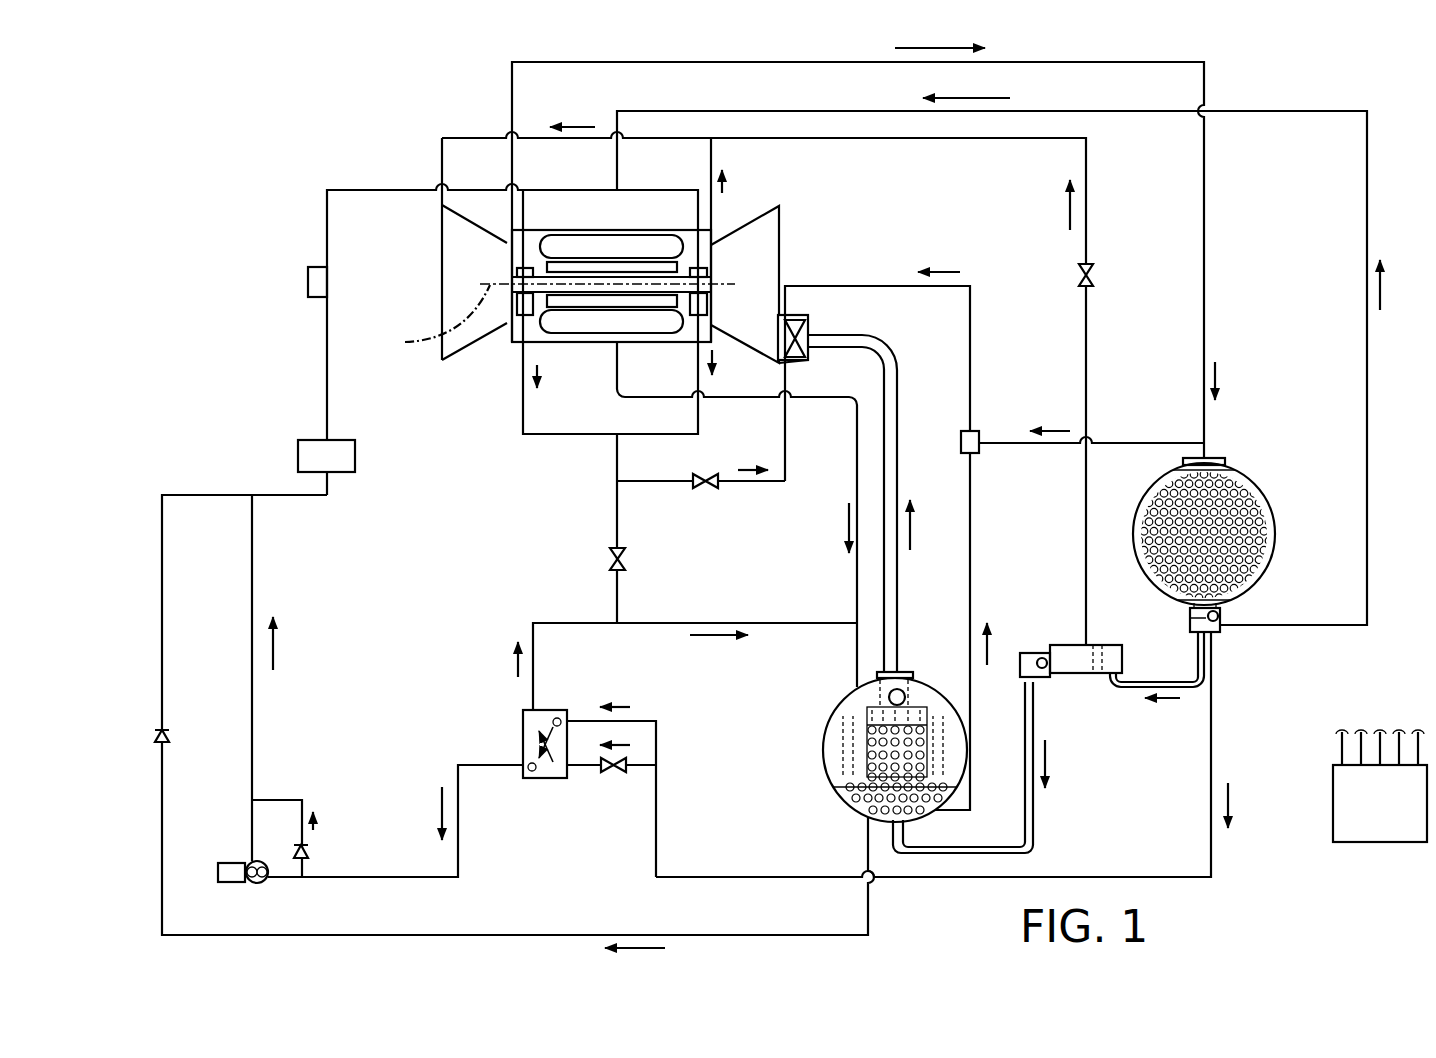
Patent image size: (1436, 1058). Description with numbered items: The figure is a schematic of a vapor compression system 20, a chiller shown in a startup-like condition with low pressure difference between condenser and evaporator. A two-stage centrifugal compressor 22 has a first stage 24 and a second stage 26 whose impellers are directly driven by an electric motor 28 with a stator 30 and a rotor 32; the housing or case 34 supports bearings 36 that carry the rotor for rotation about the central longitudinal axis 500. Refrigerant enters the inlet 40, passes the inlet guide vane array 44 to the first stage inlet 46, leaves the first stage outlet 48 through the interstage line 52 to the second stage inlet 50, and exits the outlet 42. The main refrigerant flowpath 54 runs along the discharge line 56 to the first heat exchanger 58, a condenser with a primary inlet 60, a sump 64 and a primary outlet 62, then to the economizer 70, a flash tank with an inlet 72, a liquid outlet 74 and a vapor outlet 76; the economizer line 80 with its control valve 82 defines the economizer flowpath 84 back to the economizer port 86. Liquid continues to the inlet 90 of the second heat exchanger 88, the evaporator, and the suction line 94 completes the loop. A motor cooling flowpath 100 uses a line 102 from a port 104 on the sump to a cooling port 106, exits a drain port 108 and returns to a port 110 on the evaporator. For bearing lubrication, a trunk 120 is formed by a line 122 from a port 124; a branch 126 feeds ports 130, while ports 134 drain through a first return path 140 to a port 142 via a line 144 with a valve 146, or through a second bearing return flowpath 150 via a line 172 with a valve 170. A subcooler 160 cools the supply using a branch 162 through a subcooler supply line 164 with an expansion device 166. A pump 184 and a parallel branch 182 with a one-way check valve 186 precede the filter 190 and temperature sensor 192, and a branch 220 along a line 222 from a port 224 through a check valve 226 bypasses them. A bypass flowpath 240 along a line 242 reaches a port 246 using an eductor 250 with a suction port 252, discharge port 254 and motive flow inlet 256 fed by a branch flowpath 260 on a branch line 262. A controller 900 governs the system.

The vapor compression system 20 is at (248, 115).
The compressor 22 is at (466, 372).
The first stage 24 is at (768, 233).
The second stage 26 is at (450, 302).
The electric motor 28 is at (708, 238).
The stator 30 is at (634, 324).
The rotor 32 is at (586, 275).
The housing or case 34 is at (648, 342).
The bearings 36 is at (520, 315).
The inlet 40 is at (815, 338).
The outlet 42 is at (503, 238).
The inlet guide vane array 44 is at (798, 316).
The first stage inlet 46 is at (780, 333).
The first stage outlet 48 is at (715, 247).
The second stage inlet 50 is at (440, 207).
The interstage line 52 is at (647, 142).
The main refrigerant flowpath 54 is at (826, 74).
The discharge line 56 is at (753, 62).
The first heat exchanger 58 is at (1283, 490).
The primary inlet 60 is at (1207, 458).
The primary outlet 62 is at (1194, 634).
The sump 64 is at (1182, 617).
The economizer 70 is at (1074, 702).
The inlet 72 is at (1100, 688).
The liquid outlet 74 is at (1024, 685).
The vapor outlet 76 is at (1087, 645).
The economizer line 80 is at (1090, 335).
The control valve 82 is at (1106, 275).
The economizer flowpath 84 is at (1110, 186).
The economizer port 86 is at (718, 142).
The second heat exchanger 88 is at (939, 669).
The inlet 90 is at (898, 822).
The suction line 94 is at (898, 598).
The motor cooling flowpath 100 is at (1388, 413).
The line 102 is at (1370, 568).
The port 104 is at (1222, 622).
The cooling port / motor cooling return line 106 is at (620, 232).
The drain port 108 is at (625, 343).
The port 110 is at (863, 688).
The trunk of bearing supply flowpath 120 is at (1193, 893).
The line 122 is at (1213, 853).
The port 124 is at (1215, 637).
The branch 126 is at (371, 887).
The ports 130 is at (527, 230).
The ports 134 is at (530, 345).
The first return path 140 is at (658, 492).
The port 142 is at (792, 360).
The line 144 is at (640, 481).
The valve 146 is at (712, 497).
The second bearing return flowpath 150 is at (597, 512).
The subcooler 160 is at (547, 793).
The branch 162 is at (554, 636).
The subcooler supply line 164 is at (640, 772).
The expansion device 166 is at (613, 785).
The valve 170 is at (632, 562).
The line 172 is at (612, 537).
The parallel branch 182 is at (283, 793).
The pump 184 is at (214, 850).
The one-way check valve 186 is at (320, 849).
The filter 190 is at (305, 455).
The temperature sensor 192 is at (312, 282).
The branch 220 is at (408, 942).
The line 222 is at (718, 937).
The port 224 is at (868, 822).
The check valve 226 is at (170, 720).
The bypass flowpath 240 is at (986, 350).
The line 242 is at (975, 590).
The port 246 is at (792, 313).
The eductor 250 is at (980, 447).
The suction port 252 is at (962, 455).
The discharge port 254 is at (980, 430).
The motive flow inlet 256 is at (982, 448).
The branch flowpath 260 is at (1076, 471).
The branch line 262 is at (1135, 443).
The central longitudinal axis 500 is at (430, 340).
The controller 900 is at (1399, 818).